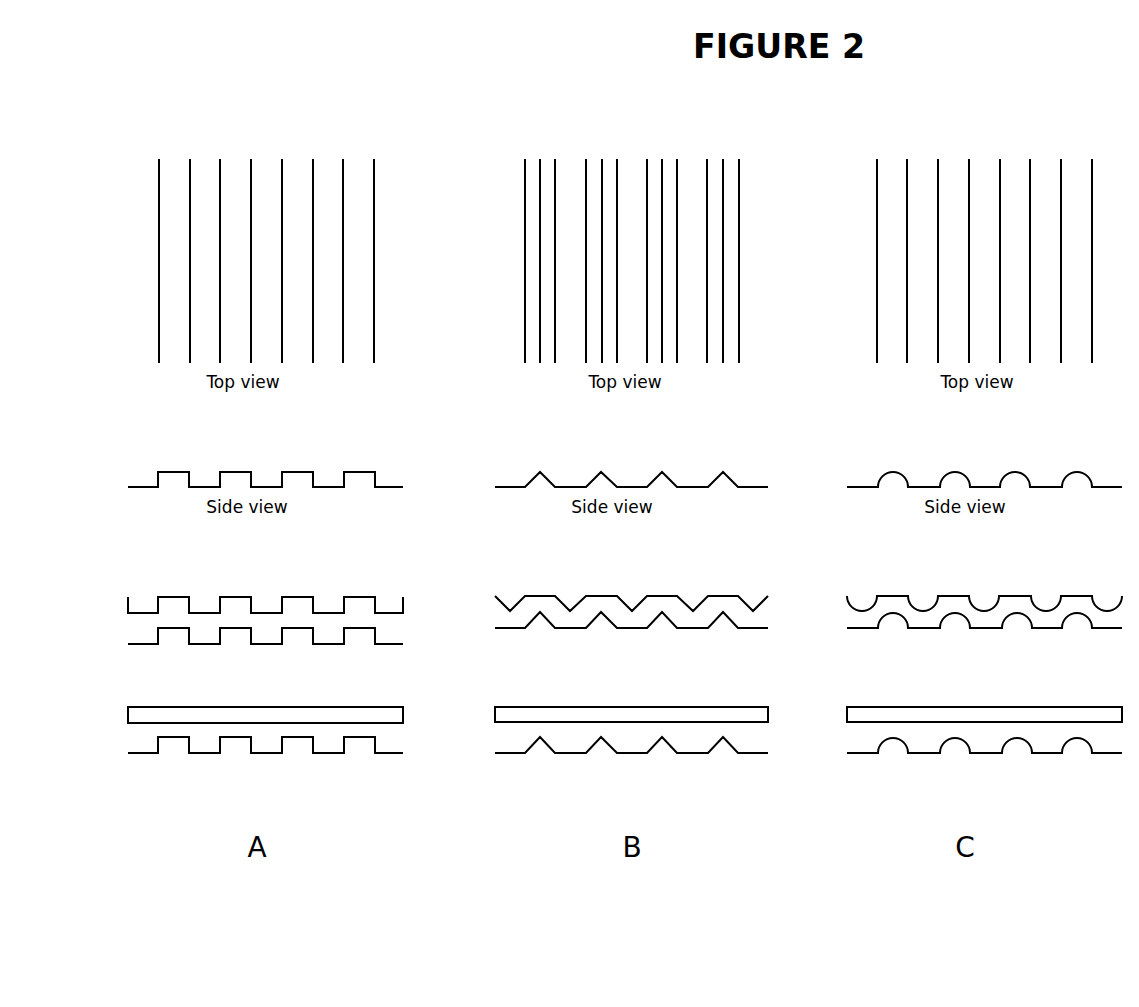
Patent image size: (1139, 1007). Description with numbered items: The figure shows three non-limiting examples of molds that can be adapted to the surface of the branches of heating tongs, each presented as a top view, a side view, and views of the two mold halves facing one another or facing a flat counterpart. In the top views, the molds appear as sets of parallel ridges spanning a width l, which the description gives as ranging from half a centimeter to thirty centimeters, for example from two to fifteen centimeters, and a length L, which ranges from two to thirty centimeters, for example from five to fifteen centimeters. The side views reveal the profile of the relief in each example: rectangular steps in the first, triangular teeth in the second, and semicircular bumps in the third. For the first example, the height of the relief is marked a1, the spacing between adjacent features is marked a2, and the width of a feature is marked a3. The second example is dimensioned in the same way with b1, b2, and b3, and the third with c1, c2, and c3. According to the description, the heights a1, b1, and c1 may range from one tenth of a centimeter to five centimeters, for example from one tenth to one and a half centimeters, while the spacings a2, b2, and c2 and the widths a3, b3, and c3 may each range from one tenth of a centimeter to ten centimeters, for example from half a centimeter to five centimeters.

The mold width l is at (170, 128).
The mold length L is at (389, 169).
The mold dimension a1 is at (143, 441).
The mold dimension a2 is at (220, 475).
The mold dimension a3 is at (313, 475).
The mold dimension b1 is at (510, 441).
The mold dimension b2 is at (586, 475).
The mold dimension b3 is at (677, 475).
The mold dimension c1 is at (862, 441).
The mold dimension c2 is at (938, 475).
The mold dimension c3 is at (1030, 475).